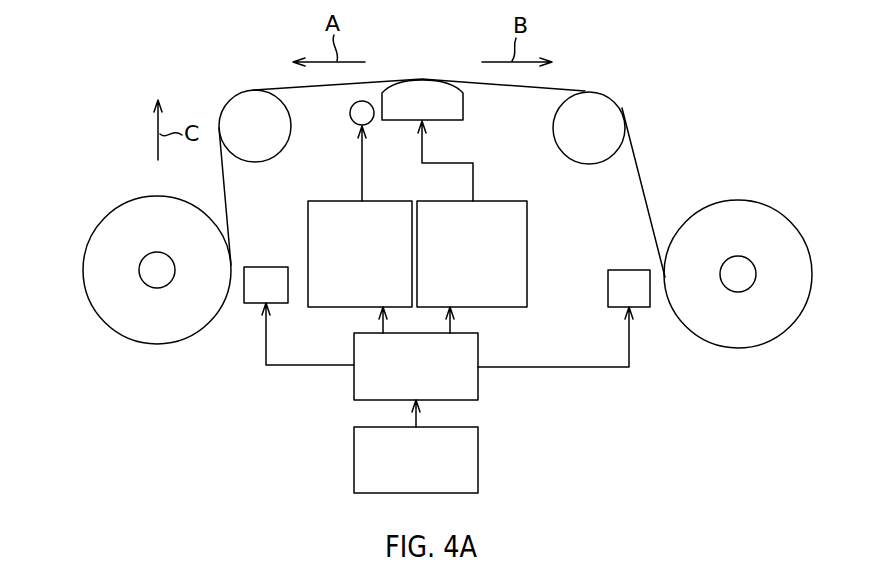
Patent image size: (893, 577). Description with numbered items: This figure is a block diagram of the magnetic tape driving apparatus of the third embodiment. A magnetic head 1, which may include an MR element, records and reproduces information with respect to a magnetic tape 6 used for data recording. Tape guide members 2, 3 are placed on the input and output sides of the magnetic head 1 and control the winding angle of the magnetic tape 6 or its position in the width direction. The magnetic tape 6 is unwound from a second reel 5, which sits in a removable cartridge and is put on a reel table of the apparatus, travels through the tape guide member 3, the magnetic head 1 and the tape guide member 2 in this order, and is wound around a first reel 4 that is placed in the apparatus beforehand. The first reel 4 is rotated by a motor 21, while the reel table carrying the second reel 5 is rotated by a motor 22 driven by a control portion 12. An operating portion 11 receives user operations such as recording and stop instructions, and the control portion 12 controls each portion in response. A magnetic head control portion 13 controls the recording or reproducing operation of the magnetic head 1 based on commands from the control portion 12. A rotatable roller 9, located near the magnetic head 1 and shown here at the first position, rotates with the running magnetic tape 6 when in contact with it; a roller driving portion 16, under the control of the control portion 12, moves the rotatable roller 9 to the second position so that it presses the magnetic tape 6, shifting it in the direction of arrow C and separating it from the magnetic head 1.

The magnetic head 1 is at (463, 103).
The tape guide member 2 is at (237, 88).
The tape guide member 3 is at (617, 104).
The first reel 4 is at (157, 346).
The second reel 5 is at (738, 349).
The magnetic tape 6 is at (643, 186).
The rotatable roller 9 is at (349, 113).
The operating portion 11 is at (478, 448).
The control portion 12 is at (478, 346).
The magnetic head control portion 13 is at (492, 201).
The roller driving portion 16 is at (372, 201).
The motor 21 is at (266, 267).
The motor 22 is at (630, 270).